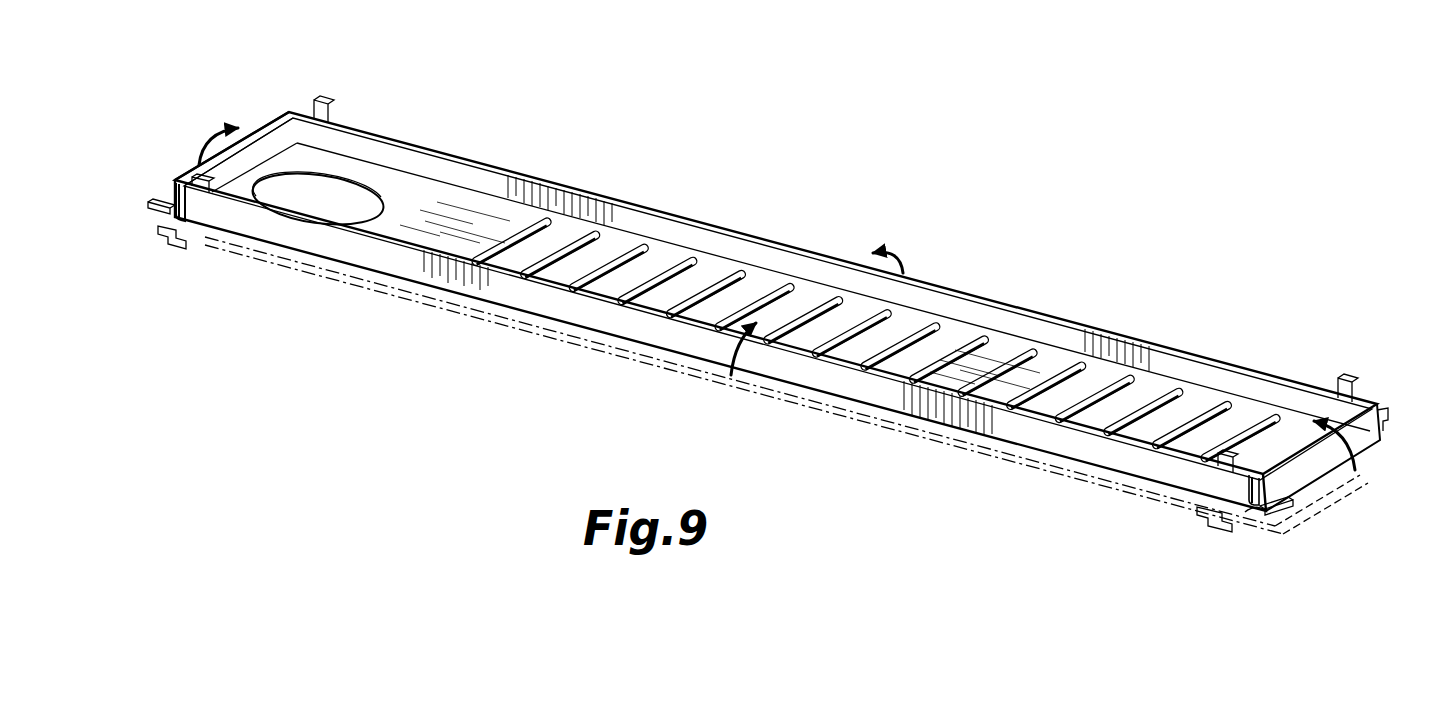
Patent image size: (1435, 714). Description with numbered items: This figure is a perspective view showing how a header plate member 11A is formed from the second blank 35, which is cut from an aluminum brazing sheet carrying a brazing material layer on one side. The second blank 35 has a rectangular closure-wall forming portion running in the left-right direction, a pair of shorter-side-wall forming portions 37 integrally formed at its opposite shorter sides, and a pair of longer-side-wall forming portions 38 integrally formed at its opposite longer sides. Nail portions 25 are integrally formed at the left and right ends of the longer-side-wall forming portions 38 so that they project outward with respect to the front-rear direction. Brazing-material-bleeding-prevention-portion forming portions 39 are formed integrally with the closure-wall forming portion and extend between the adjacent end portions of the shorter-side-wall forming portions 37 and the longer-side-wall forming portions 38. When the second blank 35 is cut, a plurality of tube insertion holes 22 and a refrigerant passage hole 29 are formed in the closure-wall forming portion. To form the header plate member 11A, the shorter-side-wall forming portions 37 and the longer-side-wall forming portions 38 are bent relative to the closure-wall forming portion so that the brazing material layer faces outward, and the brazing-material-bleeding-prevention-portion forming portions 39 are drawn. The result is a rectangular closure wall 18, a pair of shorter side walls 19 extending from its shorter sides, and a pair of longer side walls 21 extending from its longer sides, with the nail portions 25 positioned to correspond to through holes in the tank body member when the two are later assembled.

The header plate member 11A is at (891, 195).
The closure wall 18 is at (470, 215).
The shorter side walls 19 is at (275, 140).
The longer side walls 21 is at (1128, 345).
The tube insertion holes 22 is at (978, 345).
The nail portions 25 is at (322, 98).
The refrigerant passage hole 29 is at (370, 190).
The second blank 35 is at (640, 365).
The shorter-side-wall forming portions 37 is at (160, 187).
The longer-side-wall forming portions 38 is at (943, 452).
The brazing-material-bleeding-prevention-portion forming portions 39 is at (1255, 520).